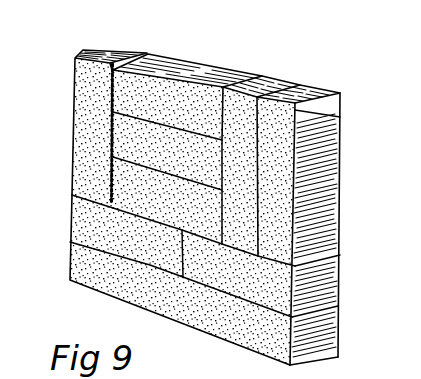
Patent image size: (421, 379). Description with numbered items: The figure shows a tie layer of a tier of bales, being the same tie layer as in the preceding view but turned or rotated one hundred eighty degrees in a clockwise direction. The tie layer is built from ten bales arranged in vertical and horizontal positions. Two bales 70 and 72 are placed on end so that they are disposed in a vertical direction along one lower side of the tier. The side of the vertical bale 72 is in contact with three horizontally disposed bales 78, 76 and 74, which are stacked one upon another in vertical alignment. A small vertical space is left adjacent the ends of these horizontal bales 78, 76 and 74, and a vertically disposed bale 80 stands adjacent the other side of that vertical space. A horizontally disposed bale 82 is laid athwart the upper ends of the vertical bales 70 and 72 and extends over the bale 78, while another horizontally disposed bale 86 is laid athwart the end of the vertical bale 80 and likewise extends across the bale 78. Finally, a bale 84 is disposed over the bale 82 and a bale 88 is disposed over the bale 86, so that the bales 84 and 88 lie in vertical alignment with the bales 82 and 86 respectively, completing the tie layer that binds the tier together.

The bale 70 is at (313, 88).
The bale 72 is at (268, 78).
The bale 74 is at (120, 87).
The bale 76 is at (128, 133).
The bale 78 is at (122, 170).
The bale 80 is at (121, 49).
The bale 82 is at (332, 290).
The bale 84 is at (332, 340).
The bale 86 is at (78, 215).
The bale 88 is at (80, 262).